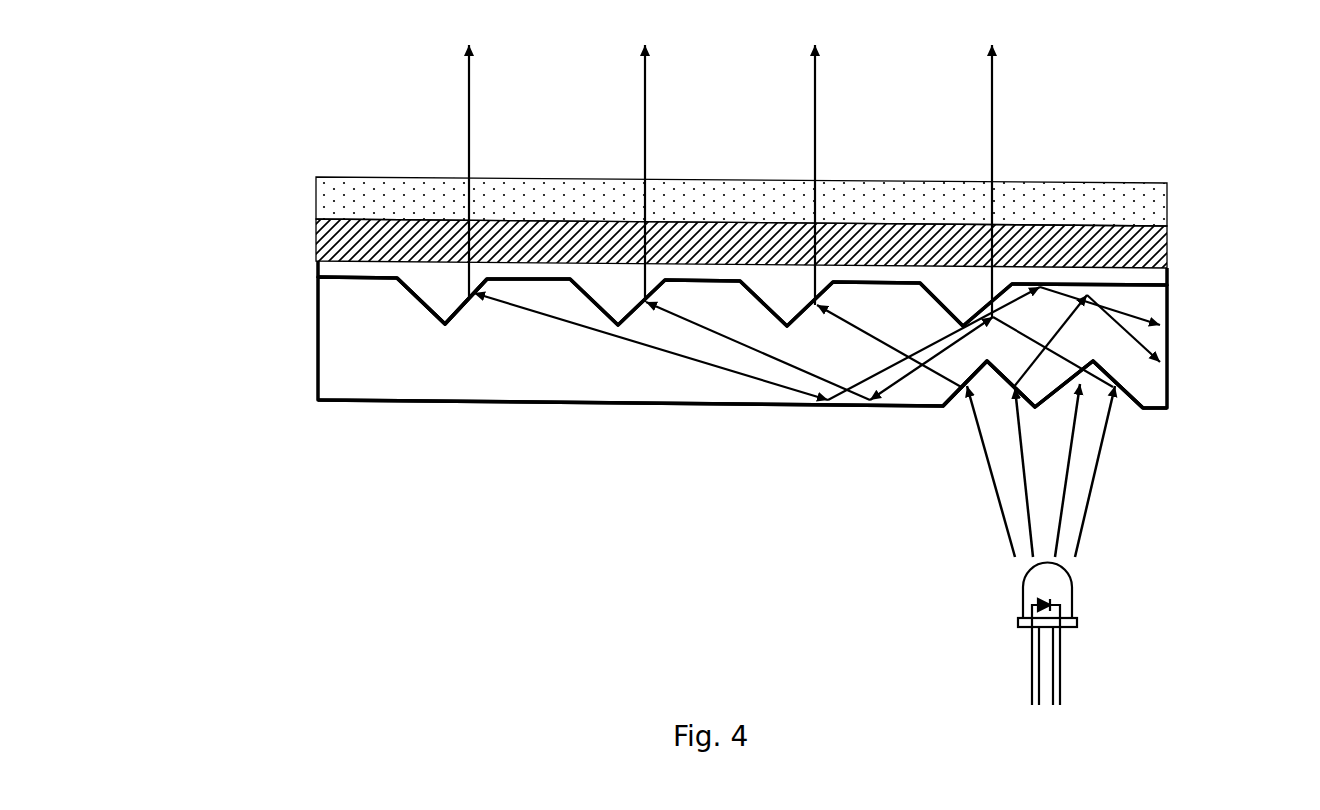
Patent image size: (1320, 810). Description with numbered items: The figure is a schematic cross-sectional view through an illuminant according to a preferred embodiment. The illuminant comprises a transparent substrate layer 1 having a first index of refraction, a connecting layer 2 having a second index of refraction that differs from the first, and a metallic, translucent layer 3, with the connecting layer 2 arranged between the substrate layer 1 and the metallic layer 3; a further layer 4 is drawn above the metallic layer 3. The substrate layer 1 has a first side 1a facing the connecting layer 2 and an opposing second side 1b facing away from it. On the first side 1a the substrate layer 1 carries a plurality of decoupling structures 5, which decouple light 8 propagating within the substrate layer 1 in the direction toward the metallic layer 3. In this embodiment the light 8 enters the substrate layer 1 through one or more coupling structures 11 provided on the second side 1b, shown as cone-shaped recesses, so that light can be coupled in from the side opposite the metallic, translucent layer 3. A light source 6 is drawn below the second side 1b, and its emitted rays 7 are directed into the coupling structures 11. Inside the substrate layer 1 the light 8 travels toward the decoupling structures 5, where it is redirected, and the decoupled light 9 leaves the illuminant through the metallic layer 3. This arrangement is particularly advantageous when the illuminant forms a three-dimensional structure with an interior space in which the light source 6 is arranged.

The substrate layer 1 is at (1180, 338).
The first side 1a is at (350, 281).
The second side 1b is at (331, 405).
The connecting layer 2 is at (1174, 280).
The metallic, translucent layer 3 is at (1173, 253).
The diffusion layer 4 is at (1174, 205).
The decoupling structures 5 is at (431, 318).
The light source 6 is at (1124, 629).
The light rays from LED 7 is at (1114, 497).
The light 8 is at (516, 320).
The emitted light 9 is at (997, 104).
The coupling structures 11 is at (1148, 390).